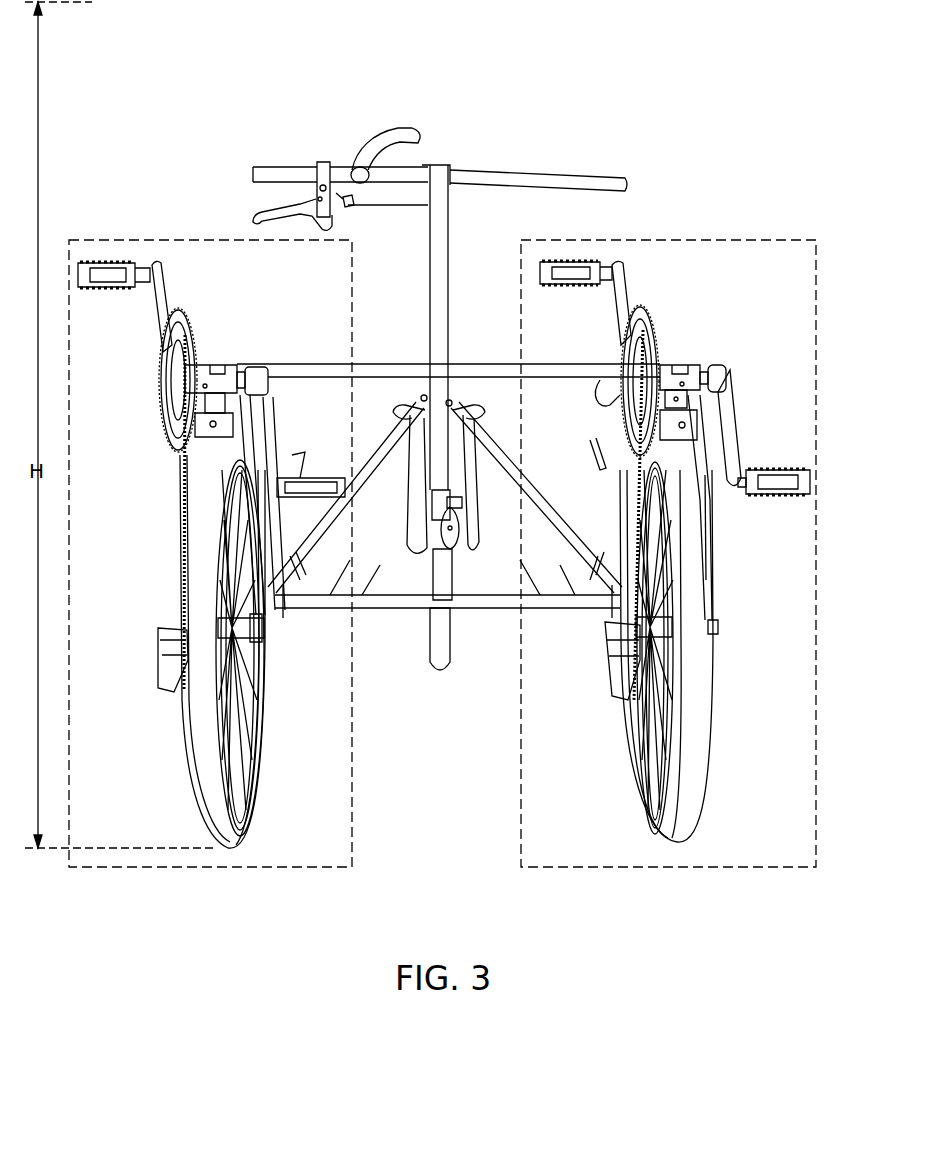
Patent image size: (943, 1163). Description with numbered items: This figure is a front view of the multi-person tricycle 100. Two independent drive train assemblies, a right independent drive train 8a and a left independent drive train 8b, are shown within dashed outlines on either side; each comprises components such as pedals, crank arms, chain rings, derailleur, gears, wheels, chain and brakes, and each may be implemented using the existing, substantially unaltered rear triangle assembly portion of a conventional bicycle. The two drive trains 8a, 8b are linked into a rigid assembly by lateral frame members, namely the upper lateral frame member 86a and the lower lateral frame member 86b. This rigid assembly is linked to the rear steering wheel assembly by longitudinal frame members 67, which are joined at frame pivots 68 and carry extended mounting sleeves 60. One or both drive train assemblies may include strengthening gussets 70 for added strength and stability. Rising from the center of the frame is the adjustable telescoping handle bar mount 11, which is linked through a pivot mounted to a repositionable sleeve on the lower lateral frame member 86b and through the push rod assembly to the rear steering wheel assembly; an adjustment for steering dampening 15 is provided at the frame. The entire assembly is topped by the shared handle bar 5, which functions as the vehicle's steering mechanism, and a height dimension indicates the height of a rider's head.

The tricycle 100 is at (566, 86).
The shared handle bar 5 is at (471, 172).
The right independent drive train 8a is at (174, 240).
The left independent drive train 8b is at (710, 240).
The upper lateral frame member 86a is at (297, 366).
The lower lateral frame member 86b is at (320, 622).
The adjustable telescoping handle bar mount 11 is at (455, 383).
The adjustment for steering dampening 15 is at (493, 409).
The frame pivots 68 is at (446, 403).
The longitudinal frame members 67 is at (403, 451).
The extended mounting sleeves 60 is at (332, 524).
The strengthening gussets 70 is at (620, 565).